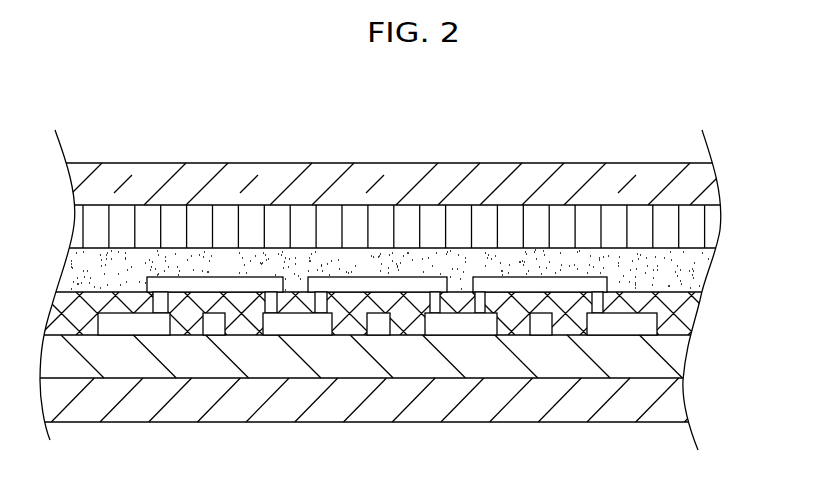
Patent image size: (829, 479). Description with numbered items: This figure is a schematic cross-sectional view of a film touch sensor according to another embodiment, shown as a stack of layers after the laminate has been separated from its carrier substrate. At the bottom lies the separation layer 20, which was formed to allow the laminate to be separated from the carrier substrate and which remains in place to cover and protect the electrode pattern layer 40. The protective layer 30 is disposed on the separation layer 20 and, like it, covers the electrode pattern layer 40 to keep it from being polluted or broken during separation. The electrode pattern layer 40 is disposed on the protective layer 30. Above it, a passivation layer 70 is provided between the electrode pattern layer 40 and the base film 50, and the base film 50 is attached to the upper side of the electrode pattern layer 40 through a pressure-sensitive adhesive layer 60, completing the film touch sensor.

The separation layer 20 is at (663, 399).
The protective layer 30 is at (683, 363).
The electrode pattern layer 40 is at (727, 275).
The base film 50 is at (683, 183).
The pressure-sensitive adhesive layer 60 is at (682, 228).
The passivation layer 70 is at (682, 267).